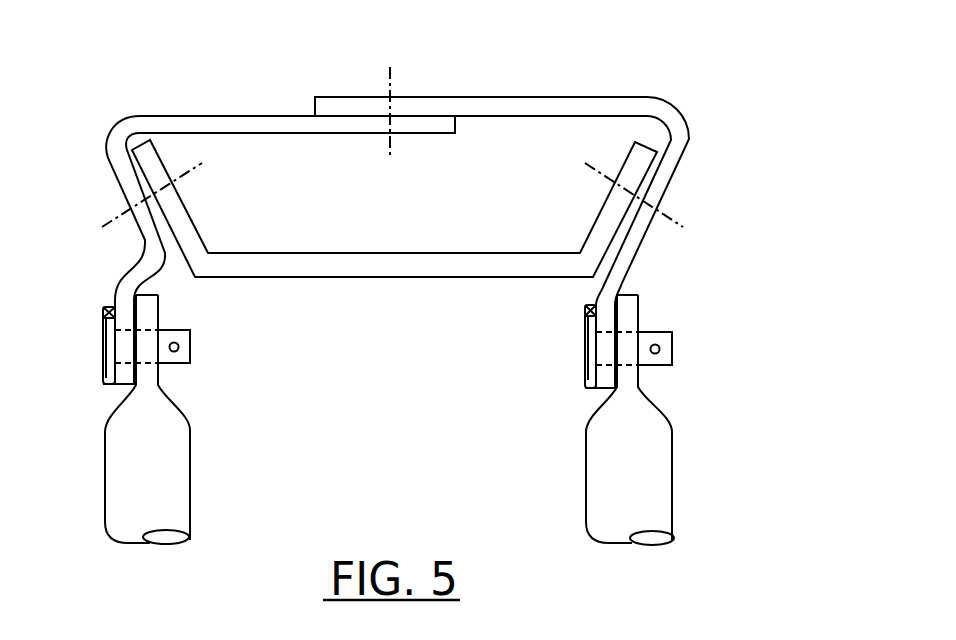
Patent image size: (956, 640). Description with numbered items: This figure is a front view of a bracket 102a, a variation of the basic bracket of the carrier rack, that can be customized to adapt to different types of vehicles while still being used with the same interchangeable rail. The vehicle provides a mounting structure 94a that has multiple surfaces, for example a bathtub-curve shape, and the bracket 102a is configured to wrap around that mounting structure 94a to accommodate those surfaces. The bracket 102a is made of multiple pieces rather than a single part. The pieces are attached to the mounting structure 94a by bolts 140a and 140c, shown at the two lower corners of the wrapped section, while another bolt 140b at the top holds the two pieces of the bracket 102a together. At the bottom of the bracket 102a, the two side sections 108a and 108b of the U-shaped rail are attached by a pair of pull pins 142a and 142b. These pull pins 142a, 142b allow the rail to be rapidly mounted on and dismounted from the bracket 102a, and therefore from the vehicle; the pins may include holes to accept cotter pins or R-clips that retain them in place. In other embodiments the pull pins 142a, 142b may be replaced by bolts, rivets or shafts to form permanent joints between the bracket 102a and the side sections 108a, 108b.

The bracket 102a is at (511, 97).
The mounting structure 94a is at (348, 254).
The bolt 140a is at (93, 271).
The bolt 140b is at (419, 59).
The bolt 140c is at (754, 268).
The pull pin 142a is at (185, 366).
The pull pin 142b is at (667, 369).
The side section 108a is at (104, 488).
The side section 108b is at (587, 488).